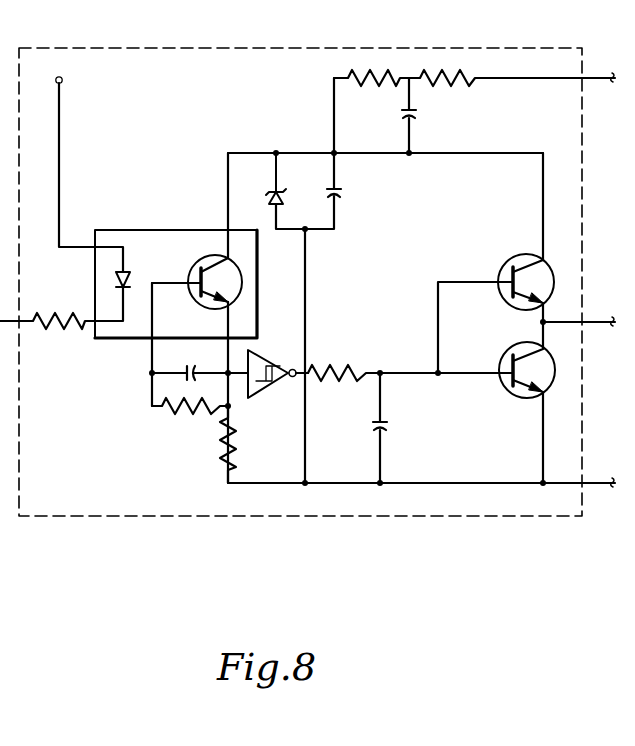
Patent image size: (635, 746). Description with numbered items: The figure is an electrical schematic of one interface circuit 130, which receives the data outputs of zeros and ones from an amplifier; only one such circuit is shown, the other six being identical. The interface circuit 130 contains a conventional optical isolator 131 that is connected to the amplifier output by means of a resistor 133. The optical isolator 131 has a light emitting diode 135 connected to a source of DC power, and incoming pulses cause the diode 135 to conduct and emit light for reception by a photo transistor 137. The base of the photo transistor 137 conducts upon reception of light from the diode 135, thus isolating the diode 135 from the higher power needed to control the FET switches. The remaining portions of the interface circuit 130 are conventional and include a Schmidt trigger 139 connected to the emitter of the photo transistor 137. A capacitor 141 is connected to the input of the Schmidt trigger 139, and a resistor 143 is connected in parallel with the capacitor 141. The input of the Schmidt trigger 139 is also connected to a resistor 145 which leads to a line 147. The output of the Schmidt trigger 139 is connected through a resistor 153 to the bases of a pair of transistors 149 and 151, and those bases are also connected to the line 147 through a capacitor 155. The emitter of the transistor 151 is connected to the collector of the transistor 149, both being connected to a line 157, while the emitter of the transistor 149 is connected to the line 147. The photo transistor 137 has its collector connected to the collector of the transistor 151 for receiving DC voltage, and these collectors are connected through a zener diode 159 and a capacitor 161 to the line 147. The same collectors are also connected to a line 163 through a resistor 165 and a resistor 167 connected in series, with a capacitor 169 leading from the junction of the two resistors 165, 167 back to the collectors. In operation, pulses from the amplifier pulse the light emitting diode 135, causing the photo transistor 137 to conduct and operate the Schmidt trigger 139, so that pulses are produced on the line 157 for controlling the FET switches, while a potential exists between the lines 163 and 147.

The interface circuit 130 is at (127, 47).
The optical isolator 131 is at (152, 229).
The resistor 133 is at (50, 319).
The light emitting diode 135 is at (128, 272).
The photo transistor 137 is at (212, 256).
The Schmidt trigger 139 is at (266, 398).
The capacitor 141 is at (203, 370).
The resistor 143 is at (181, 415).
The resistor 145 is at (222, 462).
The line 147 is at (610, 480).
The transistor 149 is at (506, 397).
The transistor 151 is at (511, 262).
The resistor 153 is at (340, 372).
The capacitor 155 is at (390, 433).
The line 157 is at (610, 319).
The zener diode 159 is at (283, 198).
The capacitor 161 is at (345, 189).
The line 163 is at (530, 76).
The resistor 165 is at (368, 76).
The resistor 167 is at (447, 76).
The capacitor 169 is at (420, 117).